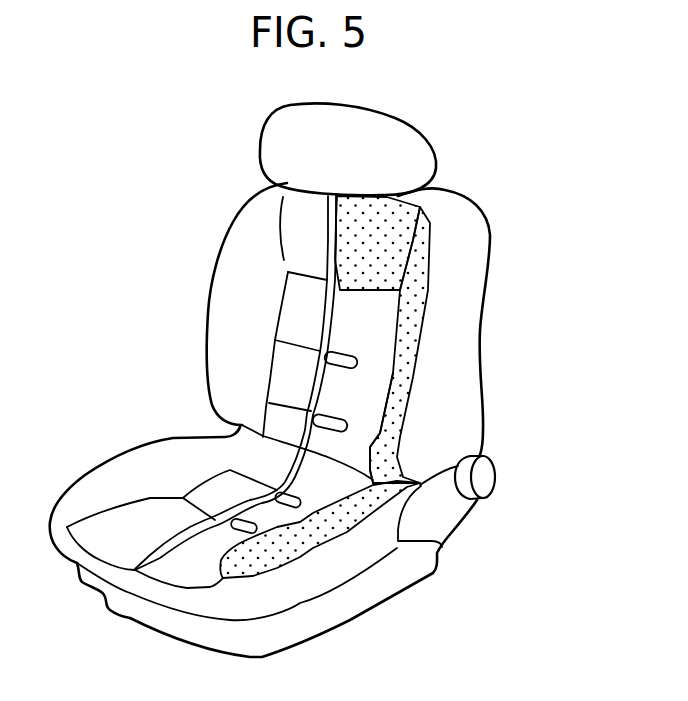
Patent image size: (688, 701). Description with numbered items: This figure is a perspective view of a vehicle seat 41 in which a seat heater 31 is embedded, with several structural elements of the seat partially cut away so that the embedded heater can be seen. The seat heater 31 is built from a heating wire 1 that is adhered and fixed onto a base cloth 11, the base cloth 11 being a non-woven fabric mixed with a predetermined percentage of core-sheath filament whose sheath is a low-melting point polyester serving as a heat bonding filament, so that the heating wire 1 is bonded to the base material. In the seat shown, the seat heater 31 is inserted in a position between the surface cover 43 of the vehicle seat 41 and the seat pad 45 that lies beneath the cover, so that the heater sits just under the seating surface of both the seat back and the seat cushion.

The heating wire 1 is at (352, 350).
The base cloth 11 is at (370, 402).
The seat heater 31 is at (374, 443).
The vehicle seat 41 is at (470, 255).
The surface cover 43 is at (200, 463).
The seat pad 45 is at (277, 550).